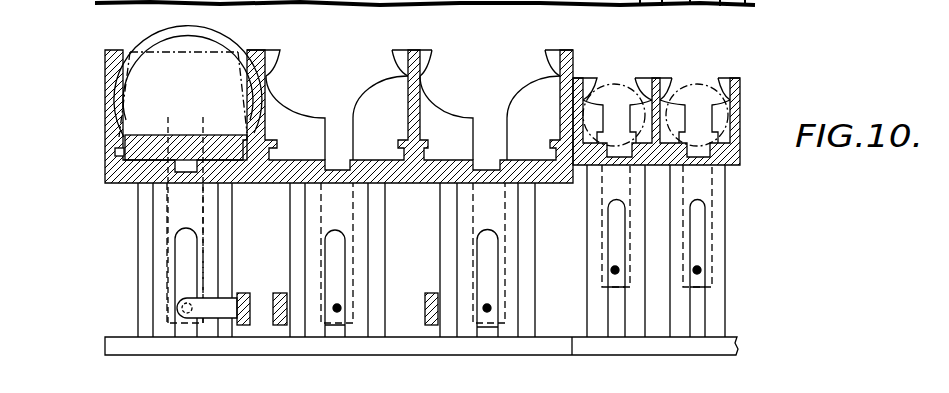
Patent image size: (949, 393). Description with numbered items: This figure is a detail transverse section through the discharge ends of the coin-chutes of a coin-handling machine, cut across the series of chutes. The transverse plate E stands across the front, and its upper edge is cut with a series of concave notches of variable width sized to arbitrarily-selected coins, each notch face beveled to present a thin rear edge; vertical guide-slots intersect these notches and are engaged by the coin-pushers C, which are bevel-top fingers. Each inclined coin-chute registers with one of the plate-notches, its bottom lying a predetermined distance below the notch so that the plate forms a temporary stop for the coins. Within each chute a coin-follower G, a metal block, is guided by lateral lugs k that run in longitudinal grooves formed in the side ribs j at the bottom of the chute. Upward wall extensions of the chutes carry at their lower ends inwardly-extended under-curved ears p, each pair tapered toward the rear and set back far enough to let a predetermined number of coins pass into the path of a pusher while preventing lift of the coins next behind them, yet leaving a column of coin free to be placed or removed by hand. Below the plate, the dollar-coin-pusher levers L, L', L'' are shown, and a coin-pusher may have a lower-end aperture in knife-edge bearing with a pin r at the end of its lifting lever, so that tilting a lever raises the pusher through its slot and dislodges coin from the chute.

The chute-ears p is at (131, 53).
The coin-follower G is at (188, 81).
The side ribs j is at (121, 138).
The lateral lugs k is at (115, 152).
The transverse plate E is at (292, 220).
The dollar-coin-pusher lever L'' is at (226, 283).
The dollar-coin-pusher lever L' is at (299, 273).
The dollar-coin-pusher lever L is at (426, 287).
The coin-pushers C is at (335, 264).
The pin r is at (341, 308).